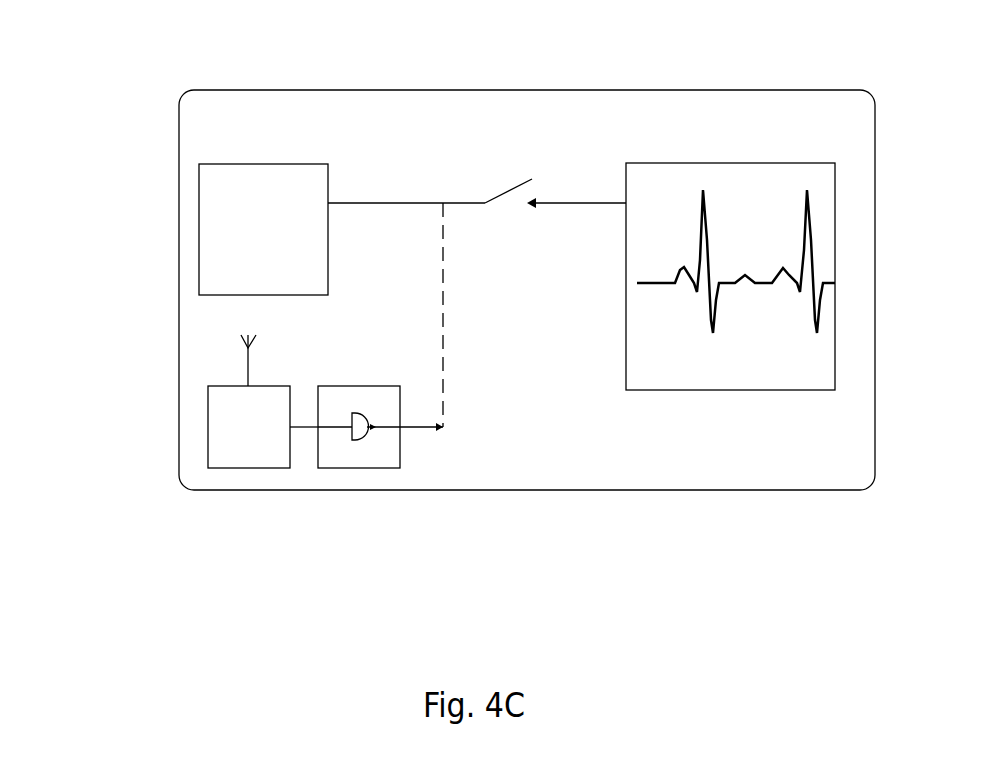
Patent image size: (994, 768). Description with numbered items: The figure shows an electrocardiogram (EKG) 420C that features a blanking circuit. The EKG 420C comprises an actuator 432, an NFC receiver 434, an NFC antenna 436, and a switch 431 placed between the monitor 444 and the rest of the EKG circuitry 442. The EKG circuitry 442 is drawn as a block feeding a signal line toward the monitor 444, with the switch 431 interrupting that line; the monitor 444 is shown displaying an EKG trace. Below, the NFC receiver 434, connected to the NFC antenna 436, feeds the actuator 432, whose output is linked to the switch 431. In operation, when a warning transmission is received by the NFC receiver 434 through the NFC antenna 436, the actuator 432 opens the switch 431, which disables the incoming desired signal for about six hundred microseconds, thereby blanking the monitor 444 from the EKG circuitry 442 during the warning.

The electrocardiogram (EKG) 420C is at (496, 251).
The switch 431 is at (456, 226).
The actuator 432 is at (330, 475).
The NFC receiver 434 is at (178, 423).
The NFC antenna 436 is at (144, 344).
The EKG circuitry 442 is at (183, 229).
The monitor 444 is at (734, 212).